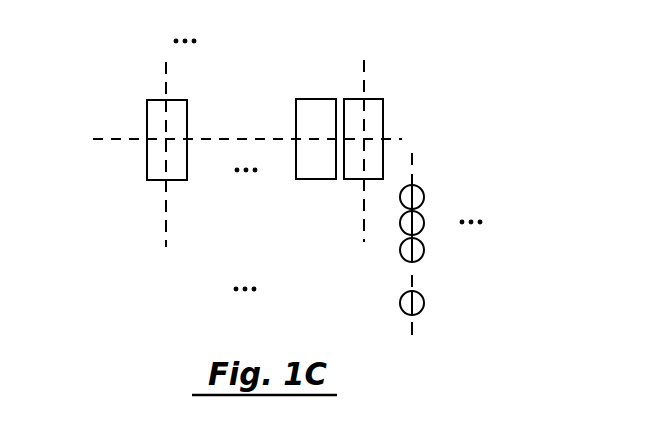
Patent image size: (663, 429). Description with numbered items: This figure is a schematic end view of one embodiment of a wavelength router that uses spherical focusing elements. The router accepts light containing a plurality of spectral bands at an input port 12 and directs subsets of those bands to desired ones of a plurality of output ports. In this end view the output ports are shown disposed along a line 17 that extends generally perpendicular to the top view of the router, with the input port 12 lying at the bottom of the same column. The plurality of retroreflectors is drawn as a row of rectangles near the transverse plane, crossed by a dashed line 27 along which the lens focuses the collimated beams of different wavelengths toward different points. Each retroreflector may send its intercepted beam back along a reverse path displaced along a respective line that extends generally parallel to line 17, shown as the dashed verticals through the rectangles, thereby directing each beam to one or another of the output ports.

The line 27 is at (99, 140).
The line 17 is at (412, 160).
The input port 12 is at (422, 300).